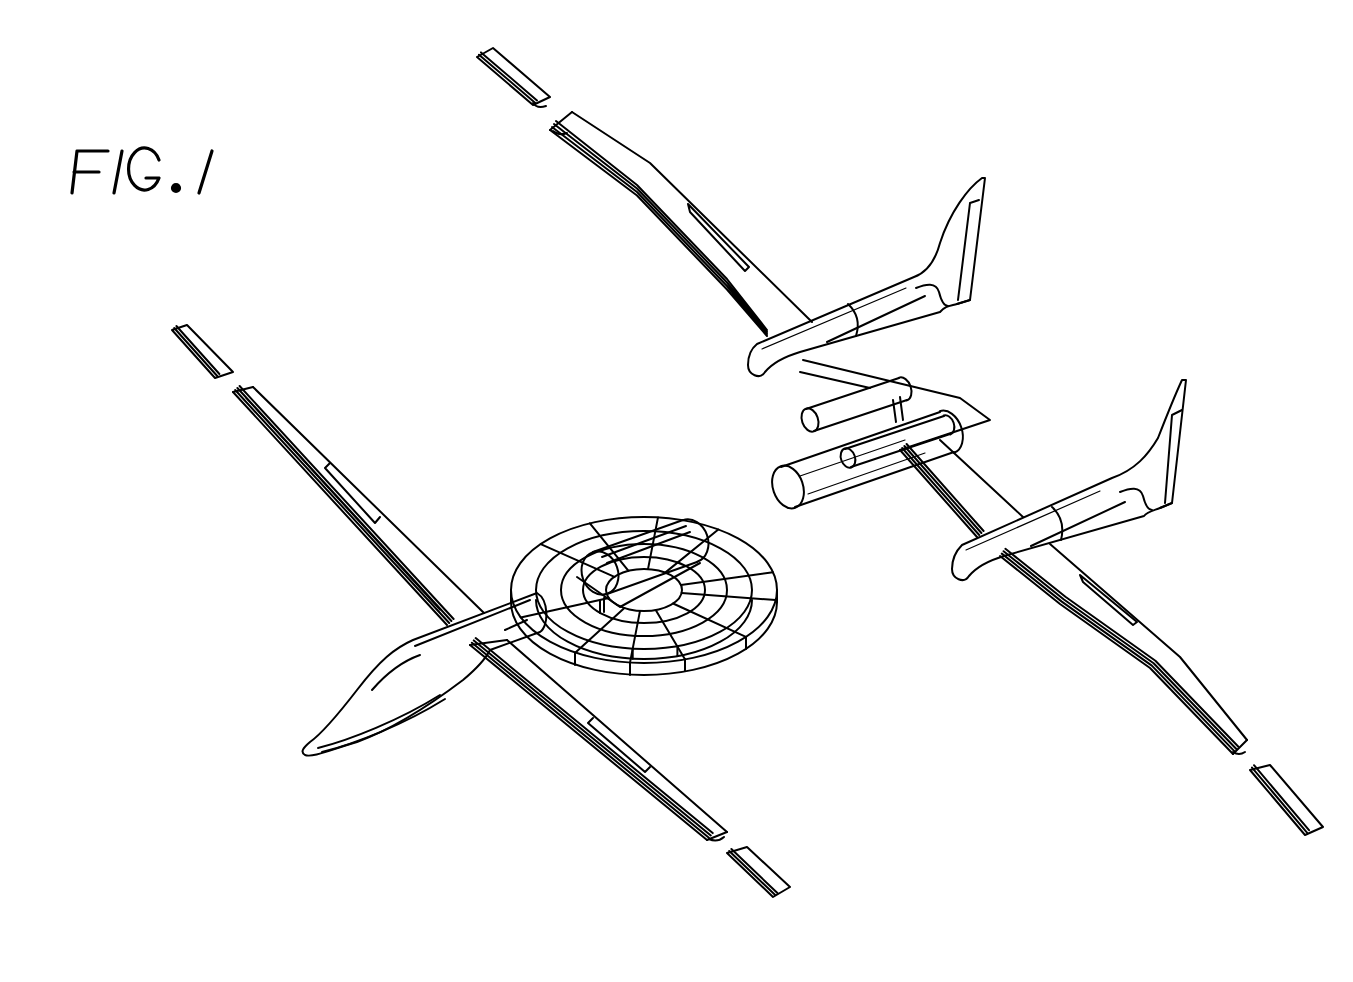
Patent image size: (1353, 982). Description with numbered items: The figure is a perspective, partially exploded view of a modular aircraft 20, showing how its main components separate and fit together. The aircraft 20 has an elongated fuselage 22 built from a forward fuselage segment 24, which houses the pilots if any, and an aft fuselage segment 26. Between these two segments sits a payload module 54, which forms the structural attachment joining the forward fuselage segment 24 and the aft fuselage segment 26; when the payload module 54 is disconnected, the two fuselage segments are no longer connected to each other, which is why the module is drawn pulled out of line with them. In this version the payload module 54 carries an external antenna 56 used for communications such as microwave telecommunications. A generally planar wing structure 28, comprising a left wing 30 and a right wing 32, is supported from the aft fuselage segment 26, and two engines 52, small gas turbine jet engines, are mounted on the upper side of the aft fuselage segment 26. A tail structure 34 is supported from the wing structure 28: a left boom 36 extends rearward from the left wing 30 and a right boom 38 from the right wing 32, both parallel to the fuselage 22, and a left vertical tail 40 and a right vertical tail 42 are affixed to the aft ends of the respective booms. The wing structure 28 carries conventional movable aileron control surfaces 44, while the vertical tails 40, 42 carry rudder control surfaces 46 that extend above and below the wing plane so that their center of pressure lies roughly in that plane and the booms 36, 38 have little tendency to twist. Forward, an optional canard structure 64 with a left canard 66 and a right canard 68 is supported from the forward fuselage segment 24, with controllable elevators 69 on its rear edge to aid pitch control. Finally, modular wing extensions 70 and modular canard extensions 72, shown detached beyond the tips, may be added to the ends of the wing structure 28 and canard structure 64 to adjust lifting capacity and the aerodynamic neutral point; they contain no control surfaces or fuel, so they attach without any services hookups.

The aircraft 20 is at (387, 233).
The fuselage 22 is at (785, 463).
The forward fuselage segment 24 is at (403, 735).
The aft fuselage segment 26 is at (636, 578).
The wing structure 28 is at (944, 522).
The left wing 30 is at (1035, 585).
The right wing 32 is at (688, 255).
The tail structure 34 is at (990, 334).
The left boom 36 is at (1055, 522).
The right boom 38 is at (838, 310).
The left vertical tail 40 is at (1160, 516).
The right vertical tail 42 is at (955, 312).
The aileron control surfaces 44 is at (738, 265).
The rudder control surfaces 46 is at (972, 247).
The engines 52 is at (932, 426).
The payload module 54 is at (676, 497).
The external antenna 56 is at (777, 602).
The canard structure 64 is at (338, 505).
The left canard 66 is at (660, 802).
The right canard 68 is at (340, 515).
The elevators 69 is at (360, 494).
The wing extensions 70 is at (530, 83).
The canard extensions 72 is at (180, 347).